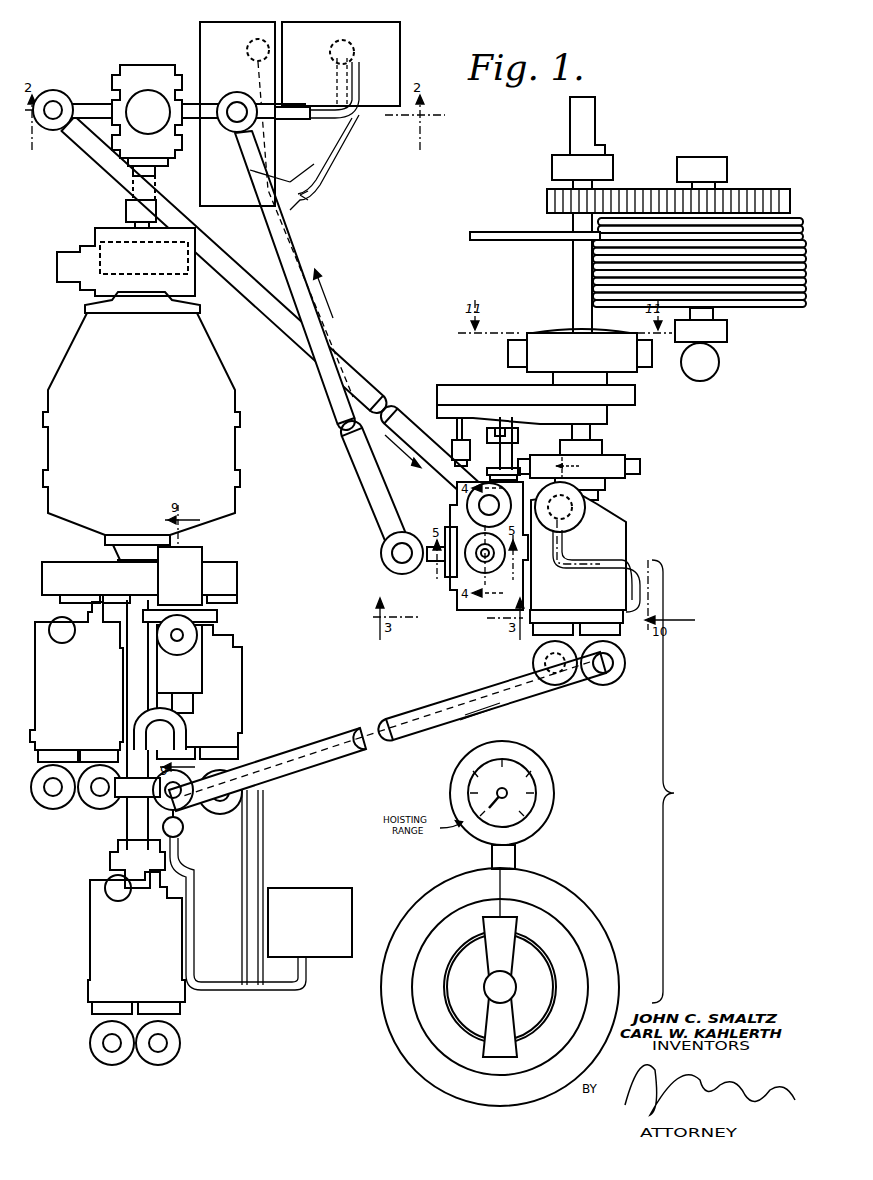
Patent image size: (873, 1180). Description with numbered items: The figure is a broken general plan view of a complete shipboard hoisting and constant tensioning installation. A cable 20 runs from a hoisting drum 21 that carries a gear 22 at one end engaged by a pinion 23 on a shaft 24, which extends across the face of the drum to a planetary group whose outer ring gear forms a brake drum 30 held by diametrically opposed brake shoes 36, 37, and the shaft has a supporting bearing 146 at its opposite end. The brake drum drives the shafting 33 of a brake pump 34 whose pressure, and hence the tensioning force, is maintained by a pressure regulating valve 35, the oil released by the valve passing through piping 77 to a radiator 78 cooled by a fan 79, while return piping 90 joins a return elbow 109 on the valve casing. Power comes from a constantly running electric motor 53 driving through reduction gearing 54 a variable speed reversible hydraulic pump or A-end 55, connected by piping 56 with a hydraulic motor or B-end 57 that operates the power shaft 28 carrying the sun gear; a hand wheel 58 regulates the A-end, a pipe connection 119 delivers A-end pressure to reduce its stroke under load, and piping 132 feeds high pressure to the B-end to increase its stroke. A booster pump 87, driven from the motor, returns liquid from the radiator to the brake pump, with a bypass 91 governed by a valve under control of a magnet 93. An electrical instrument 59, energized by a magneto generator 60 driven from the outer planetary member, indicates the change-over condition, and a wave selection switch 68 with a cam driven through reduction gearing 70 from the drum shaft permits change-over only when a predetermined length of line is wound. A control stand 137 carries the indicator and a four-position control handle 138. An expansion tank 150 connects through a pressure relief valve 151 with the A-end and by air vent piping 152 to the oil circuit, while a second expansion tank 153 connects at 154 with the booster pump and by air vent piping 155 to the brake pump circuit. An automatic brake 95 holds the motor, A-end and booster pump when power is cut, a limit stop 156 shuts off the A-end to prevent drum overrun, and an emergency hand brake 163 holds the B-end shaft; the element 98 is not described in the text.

The cable 20 is at (480, 241).
The hoisting drum 21 is at (749, 306).
The gear 22 is at (762, 196).
The pinion 23 is at (547, 201).
The shaft 24 is at (572, 278).
The power shaft 28 is at (600, 431).
The brake drum 30 is at (582, 350).
The shafting 33 is at (500, 460).
The brake pump 34 is at (462, 520).
The pressure regulating valve 35 is at (470, 566).
The brake shoe 36 is at (508, 351).
The brake shoe 37 is at (652, 357).
The electric motor 53 is at (141, 429).
The reduction gearing 54 is at (228, 572).
The hydraulic pump or A-end 55 is at (235, 668).
The piping 56 is at (426, 710).
The hydraulic motor or B-end 57 is at (616, 546).
The hand wheel 58 is at (195, 640).
The electrical instrument 59 is at (555, 778).
The magneto generator 60 is at (455, 440).
The wave selection switch 68 is at (596, 117).
The reduction gearing 70 is at (569, 134).
The piping 77 is at (365, 476).
The radiator 78 is at (237, 114).
The fan 79 is at (252, 86).
The booster pump 87 is at (165, 72).
The piping 90 is at (282, 322).
The bypass 91 is at (90, 104).
The magnet 93 is at (148, 112).
The automatic brake 95 is at (96, 232).
The beam 98 is at (492, 383).
The return elbow 109 is at (517, 510).
The pipe connection 119 is at (135, 712).
The piping 132 is at (562, 549).
The control stand 137 is at (392, 1025).
The control handle 138 is at (505, 940).
The supporting bearing 146 is at (551, 163).
The expansion tank 150 is at (310, 922).
The pressure relief valve 151 is at (184, 828).
The air vent piping 152 is at (246, 903).
The expansion tank 153 is at (356, 55).
The connection 154 is at (288, 119).
The air vent piping 155 is at (340, 153).
The limit stop 156 is at (713, 371).
The emergency hand brake 163 is at (642, 458).